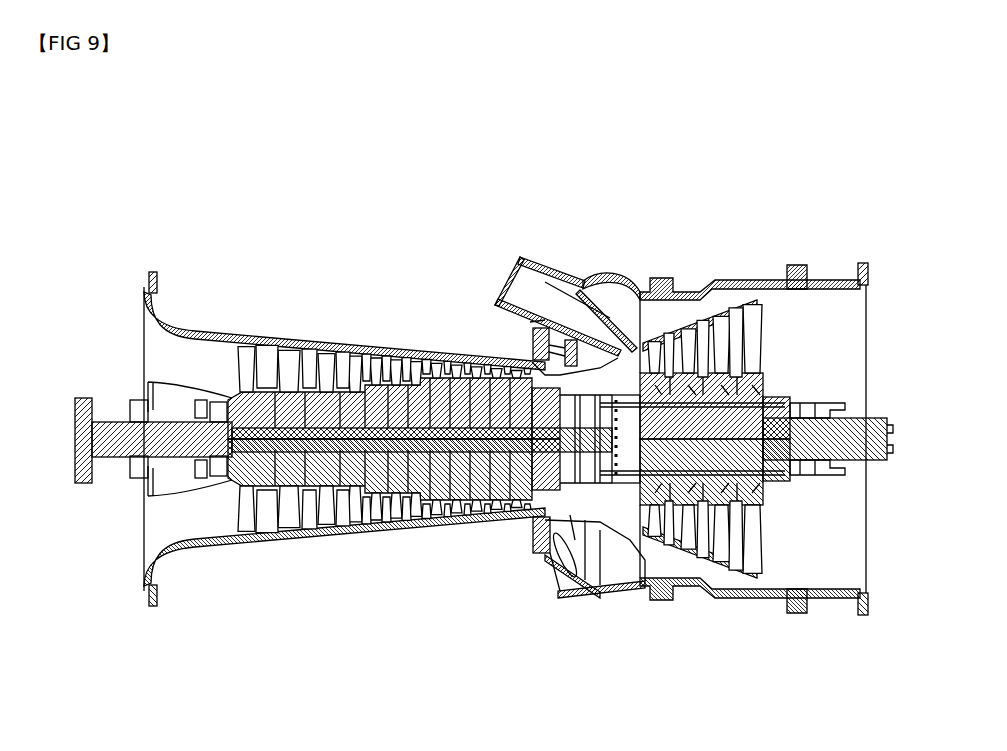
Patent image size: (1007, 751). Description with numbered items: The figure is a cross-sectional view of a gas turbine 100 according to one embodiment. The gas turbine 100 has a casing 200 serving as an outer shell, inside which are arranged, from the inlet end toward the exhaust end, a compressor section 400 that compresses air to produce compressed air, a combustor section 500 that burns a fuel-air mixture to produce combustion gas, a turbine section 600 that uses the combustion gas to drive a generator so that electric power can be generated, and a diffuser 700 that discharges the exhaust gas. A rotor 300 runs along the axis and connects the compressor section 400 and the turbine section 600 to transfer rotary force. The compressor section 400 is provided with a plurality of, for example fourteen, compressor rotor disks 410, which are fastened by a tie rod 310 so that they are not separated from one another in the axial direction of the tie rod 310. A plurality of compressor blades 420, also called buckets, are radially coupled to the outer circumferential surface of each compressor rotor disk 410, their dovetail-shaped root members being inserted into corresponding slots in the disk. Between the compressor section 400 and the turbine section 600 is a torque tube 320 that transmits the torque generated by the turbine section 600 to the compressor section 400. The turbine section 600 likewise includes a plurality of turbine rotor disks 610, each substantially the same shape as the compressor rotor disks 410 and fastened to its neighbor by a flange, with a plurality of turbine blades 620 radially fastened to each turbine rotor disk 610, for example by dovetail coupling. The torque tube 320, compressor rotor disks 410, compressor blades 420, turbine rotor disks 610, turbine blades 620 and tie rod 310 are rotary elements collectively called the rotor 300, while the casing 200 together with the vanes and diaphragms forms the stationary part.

The gas turbine 100 is at (152, 167).
The casing 200 is at (192, 333).
The rotor 300 is at (70, 400).
The tie rod 310 is at (228, 483).
The torque tube 320 is at (562, 560).
The compressor section 400 is at (434, 429).
The compressor rotor disk 410 is at (265, 505).
The compressor blade 420 is at (302, 542).
The combustor section 500 is at (537, 250).
The turbine section 600 is at (709, 424).
The turbine rotor disk 610 is at (750, 490).
The turbine blade 620 is at (753, 540).
The diffuser 700 is at (872, 296).